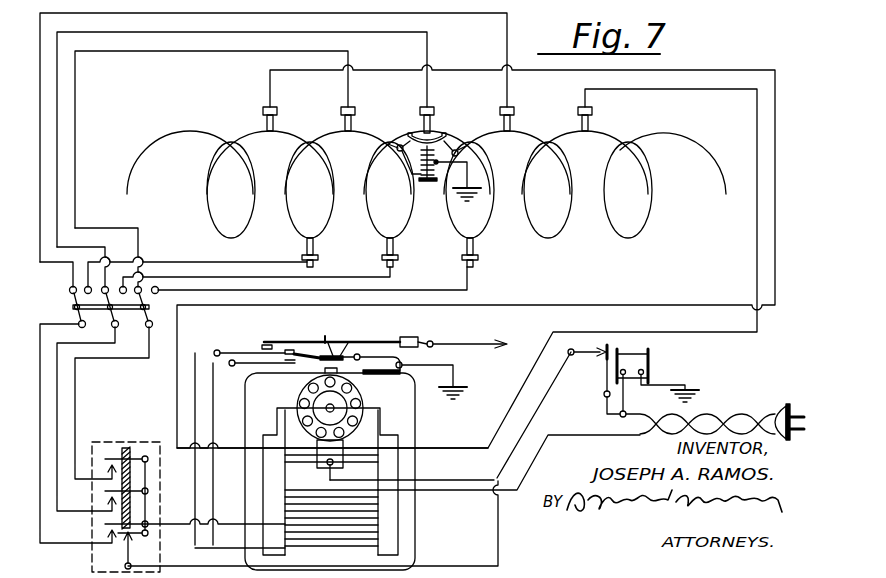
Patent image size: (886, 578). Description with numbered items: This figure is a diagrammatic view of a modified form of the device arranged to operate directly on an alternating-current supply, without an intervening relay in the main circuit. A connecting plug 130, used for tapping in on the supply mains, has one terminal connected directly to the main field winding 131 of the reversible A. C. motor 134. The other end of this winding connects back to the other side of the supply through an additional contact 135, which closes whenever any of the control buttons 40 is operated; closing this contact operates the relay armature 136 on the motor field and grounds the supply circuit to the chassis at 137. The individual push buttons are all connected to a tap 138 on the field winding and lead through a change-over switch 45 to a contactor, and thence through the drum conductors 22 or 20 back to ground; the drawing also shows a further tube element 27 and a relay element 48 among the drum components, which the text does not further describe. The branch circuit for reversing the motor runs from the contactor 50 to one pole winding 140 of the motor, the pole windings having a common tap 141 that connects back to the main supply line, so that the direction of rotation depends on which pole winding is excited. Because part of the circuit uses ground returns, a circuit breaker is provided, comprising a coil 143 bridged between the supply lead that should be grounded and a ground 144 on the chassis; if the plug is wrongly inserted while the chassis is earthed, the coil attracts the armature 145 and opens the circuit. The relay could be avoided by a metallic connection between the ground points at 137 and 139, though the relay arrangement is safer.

The drum conductor 20 is at (238, 233).
The drum conductor 22 is at (634, 232).
The vacuum tube 27 is at (512, 121).
The contactor 50 is at (590, 126).
The relay coil 48 is at (427, 183).
The ground point 139 is at (471, 187).
The change-over switch 45 is at (73, 307).
The relay armature 136 is at (339, 356).
The chassis ground 137 is at (453, 371).
The reversible A. C. motor 134 is at (280, 399).
The pole winding 140 is at (364, 446).
The common tap 141 is at (337, 472).
The main field winding 131 is at (317, 477).
The tap 138 is at (231, 522).
The control button 40 is at (137, 437).
The additional contact 135 is at (125, 552).
The coil 143 is at (646, 363).
The ground 144 is at (687, 388).
The armature 145 is at (605, 380).
The connecting plug 130 is at (782, 405).